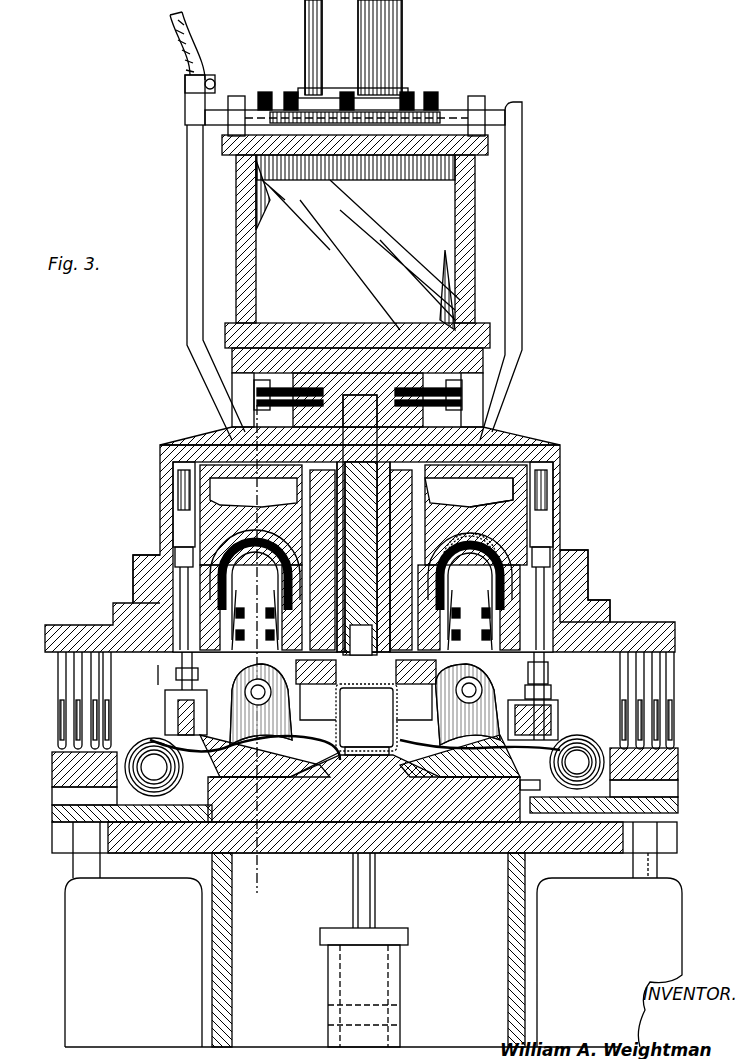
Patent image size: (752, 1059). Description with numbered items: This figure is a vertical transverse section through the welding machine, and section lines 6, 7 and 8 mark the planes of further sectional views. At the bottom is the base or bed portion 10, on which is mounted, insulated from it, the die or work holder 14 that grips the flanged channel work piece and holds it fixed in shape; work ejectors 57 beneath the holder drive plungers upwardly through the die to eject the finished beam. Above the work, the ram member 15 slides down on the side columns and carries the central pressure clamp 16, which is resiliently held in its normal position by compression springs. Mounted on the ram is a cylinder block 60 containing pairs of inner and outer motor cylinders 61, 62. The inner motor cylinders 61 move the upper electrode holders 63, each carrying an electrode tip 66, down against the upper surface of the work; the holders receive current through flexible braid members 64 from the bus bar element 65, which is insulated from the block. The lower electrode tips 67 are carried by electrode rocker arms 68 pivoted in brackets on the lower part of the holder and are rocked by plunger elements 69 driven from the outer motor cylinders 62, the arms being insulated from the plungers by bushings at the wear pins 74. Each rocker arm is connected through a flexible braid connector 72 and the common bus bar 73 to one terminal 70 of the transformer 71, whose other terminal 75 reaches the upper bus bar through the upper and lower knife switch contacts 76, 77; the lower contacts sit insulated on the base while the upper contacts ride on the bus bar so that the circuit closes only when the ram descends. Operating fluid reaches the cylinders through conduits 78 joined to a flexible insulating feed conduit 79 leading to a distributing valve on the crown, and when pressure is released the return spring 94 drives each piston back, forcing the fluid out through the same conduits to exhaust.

The section line 6- 6 is at (244, 421).
The section line 7- 7 is at (162, 685).
The section line 8- 8 is at (290, 690).
The base or bed portion 10 is at (508, 925).
The die or work holder 14 is at (410, 853).
The ram member 15 is at (492, 333).
The central pressure clamp 16 is at (253, 492).
The work ejector 57 is at (395, 991).
The cylinder block 60 is at (562, 465).
The inner motor cylinder 61 is at (426, 489).
The outer motor cylinder 62 is at (512, 489).
The upper electrode holder 63 is at (470, 600).
The flexible braid member 64 is at (490, 565).
The bus bar element 65 is at (582, 602).
The electrode tip 66 is at (366, 719).
The lower electrode tip 67 is at (376, 690).
The electrode rocker arm 68 is at (215, 712).
The plunger element 69 is at (178, 690).
The transformer terminal 70 is at (158, 866).
The transformer 71 is at (65, 945).
The flexible braid connector 72 is at (588, 728).
The common bus bar 73 is at (110, 810).
The wear pin 74 is at (552, 692).
The transformer terminal 75 is at (657, 862).
The upper knife switch contact 76 is at (50, 671).
The lower knife switch contact 77 is at (60, 728).
The conduit 78 is at (187, 228).
The flexible feed conduit 79 is at (192, 44).
The return spring 94 is at (160, 549).